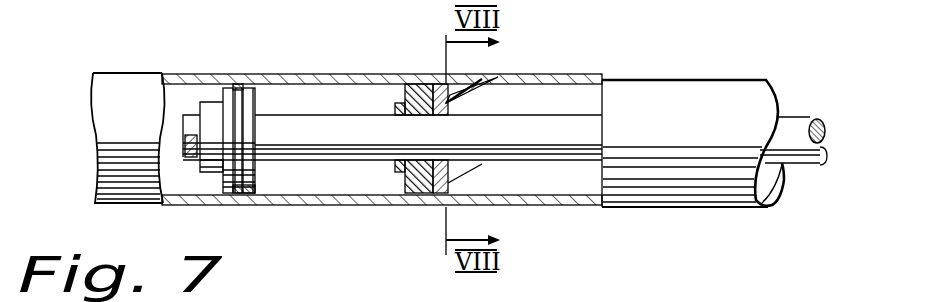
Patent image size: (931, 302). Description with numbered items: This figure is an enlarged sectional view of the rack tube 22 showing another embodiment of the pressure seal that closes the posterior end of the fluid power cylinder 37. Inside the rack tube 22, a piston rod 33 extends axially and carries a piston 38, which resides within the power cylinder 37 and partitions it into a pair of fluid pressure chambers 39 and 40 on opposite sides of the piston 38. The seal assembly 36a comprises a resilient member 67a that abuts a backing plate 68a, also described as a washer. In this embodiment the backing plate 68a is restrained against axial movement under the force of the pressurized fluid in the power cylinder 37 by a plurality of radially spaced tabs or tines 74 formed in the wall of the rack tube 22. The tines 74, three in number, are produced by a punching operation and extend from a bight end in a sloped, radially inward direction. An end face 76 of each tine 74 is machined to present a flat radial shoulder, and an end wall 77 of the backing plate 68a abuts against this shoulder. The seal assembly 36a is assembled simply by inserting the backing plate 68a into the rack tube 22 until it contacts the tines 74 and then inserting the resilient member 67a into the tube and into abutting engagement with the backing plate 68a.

The rack tube 22 is at (690, 81).
The piston rod 33 is at (584, 139).
The pressure seal assembly 36a is at (428, 78).
The fluid power cylinder 37 is at (327, 100).
The piston 38 is at (250, 191).
The fluid pressure chamber 39 is at (186, 174).
The fluid pressure chamber 40 is at (327, 182).
The resilient member 67a is at (398, 180).
The backing plate 68a is at (442, 186).
The tines 74 is at (457, 96).
The end face 76 is at (445, 104).
The end wall 77 is at (447, 182).